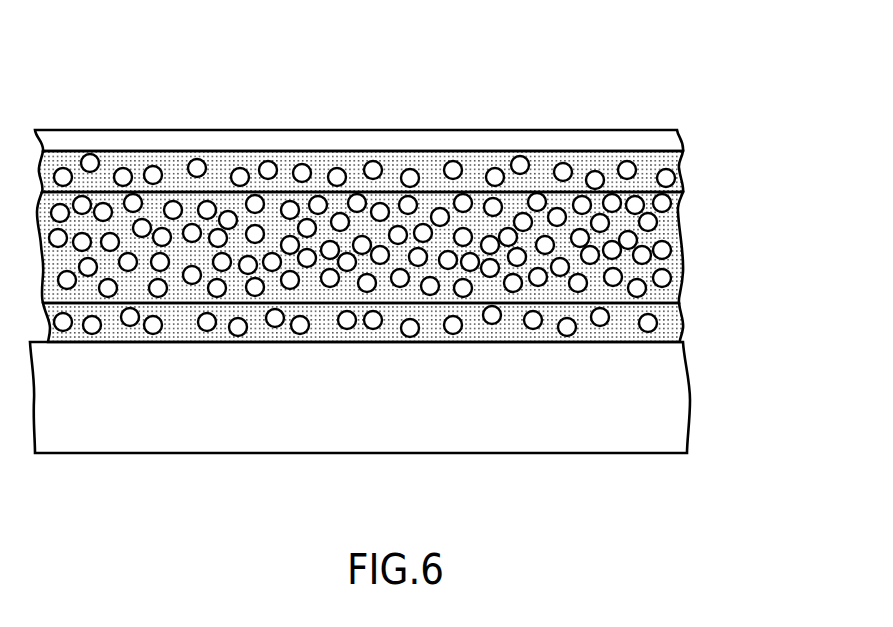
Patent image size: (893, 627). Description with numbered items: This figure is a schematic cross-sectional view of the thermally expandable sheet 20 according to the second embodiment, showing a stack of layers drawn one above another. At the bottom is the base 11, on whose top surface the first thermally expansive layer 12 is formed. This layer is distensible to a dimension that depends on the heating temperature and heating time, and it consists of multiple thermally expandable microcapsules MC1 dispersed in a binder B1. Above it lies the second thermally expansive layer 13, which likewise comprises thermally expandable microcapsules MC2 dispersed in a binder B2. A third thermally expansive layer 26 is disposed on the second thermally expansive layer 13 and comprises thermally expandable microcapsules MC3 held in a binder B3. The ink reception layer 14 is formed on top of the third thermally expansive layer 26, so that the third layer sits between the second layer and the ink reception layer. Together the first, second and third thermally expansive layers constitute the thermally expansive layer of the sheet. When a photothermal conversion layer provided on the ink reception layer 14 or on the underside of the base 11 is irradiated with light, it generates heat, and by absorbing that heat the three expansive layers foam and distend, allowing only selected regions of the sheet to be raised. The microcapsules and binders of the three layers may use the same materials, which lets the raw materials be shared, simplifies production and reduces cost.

The thermally expandable sheet 20 is at (538, 62).
The base 11 is at (670, 420).
The first thermally expansive layer 12 is at (397, 406).
The second thermally expansive layer 13 is at (400, 193).
The ink reception layer 14 is at (642, 143).
The third thermally expansive layer 26 is at (391, 136).
The thermally expandable microcapsules MC1 is at (207, 322).
The binder B1 is at (262, 333).
The thermally expandable microcapsules MC2 is at (207, 210).
The binder B2 is at (273, 212).
The thermally expandable microcapsules MC3 is at (337, 177).
The binder B3 is at (393, 178).